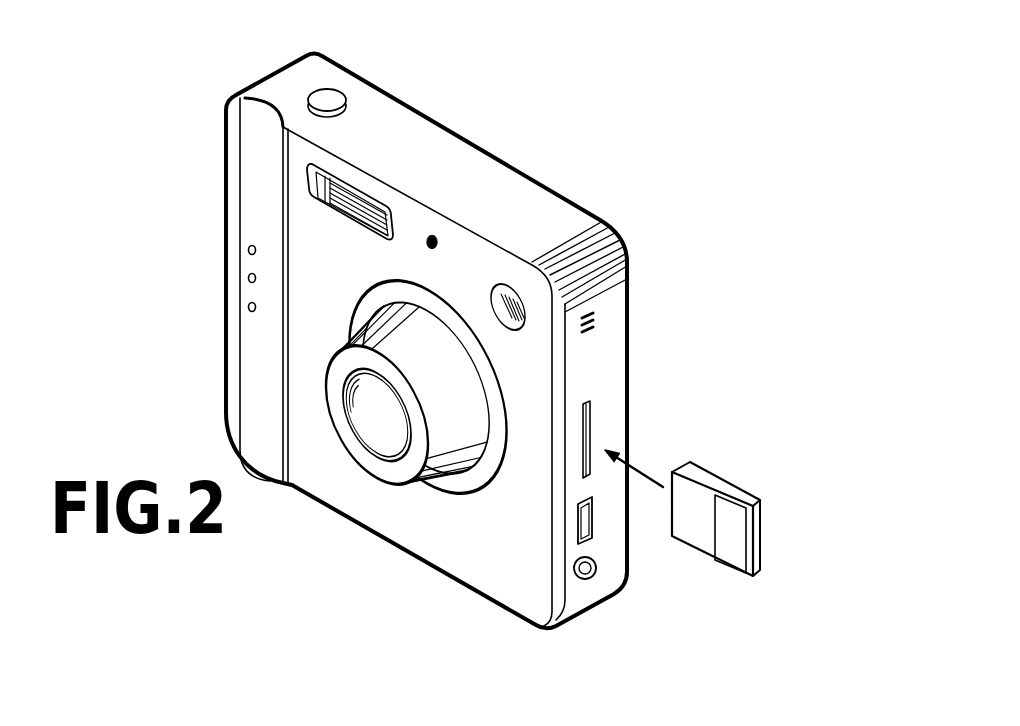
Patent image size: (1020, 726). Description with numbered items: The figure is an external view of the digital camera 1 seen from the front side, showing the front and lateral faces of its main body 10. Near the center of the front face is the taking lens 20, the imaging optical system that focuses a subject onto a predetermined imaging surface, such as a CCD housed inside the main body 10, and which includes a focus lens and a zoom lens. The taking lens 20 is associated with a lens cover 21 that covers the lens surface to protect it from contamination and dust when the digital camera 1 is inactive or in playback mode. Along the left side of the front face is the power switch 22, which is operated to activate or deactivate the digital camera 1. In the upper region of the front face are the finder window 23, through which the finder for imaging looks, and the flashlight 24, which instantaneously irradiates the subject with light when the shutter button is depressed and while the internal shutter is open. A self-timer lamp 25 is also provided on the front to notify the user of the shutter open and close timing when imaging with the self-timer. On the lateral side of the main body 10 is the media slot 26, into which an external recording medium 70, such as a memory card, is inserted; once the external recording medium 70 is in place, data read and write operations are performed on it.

The digital camera 1 is at (434, 71).
The main body 10 is at (462, 137).
The taking lens 20 is at (377, 413).
The lens cover 21 is at (397, 455).
The power switch 22 is at (250, 405).
The finder window 23 is at (553, 352).
The flashlight 24 is at (300, 177).
The self-timer lamp 25 is at (250, 260).
The media slot 26 is at (587, 422).
The external recording medium 70 is at (755, 545).